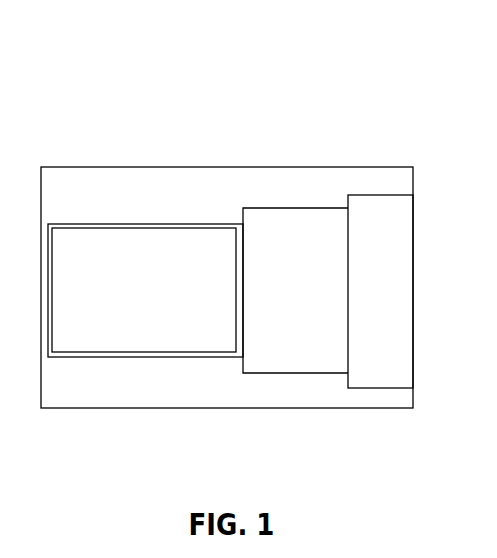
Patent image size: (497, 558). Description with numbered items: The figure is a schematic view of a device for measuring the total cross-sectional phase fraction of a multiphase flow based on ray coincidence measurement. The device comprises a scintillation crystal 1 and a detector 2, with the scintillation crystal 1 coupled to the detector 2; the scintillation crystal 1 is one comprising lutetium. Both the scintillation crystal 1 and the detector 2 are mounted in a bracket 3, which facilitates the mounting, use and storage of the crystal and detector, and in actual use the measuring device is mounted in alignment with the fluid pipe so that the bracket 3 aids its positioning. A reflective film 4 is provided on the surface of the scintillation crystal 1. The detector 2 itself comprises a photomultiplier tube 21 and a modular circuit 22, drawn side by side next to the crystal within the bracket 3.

The scintillation crystal 1 is at (145, 215).
The detector 2 is at (333, 201).
The photomultiplier tube 21 is at (297, 221).
The modular circuit 22 is at (385, 229).
The bracket 3 is at (227, 204).
The reflective film 4 is at (145, 205).